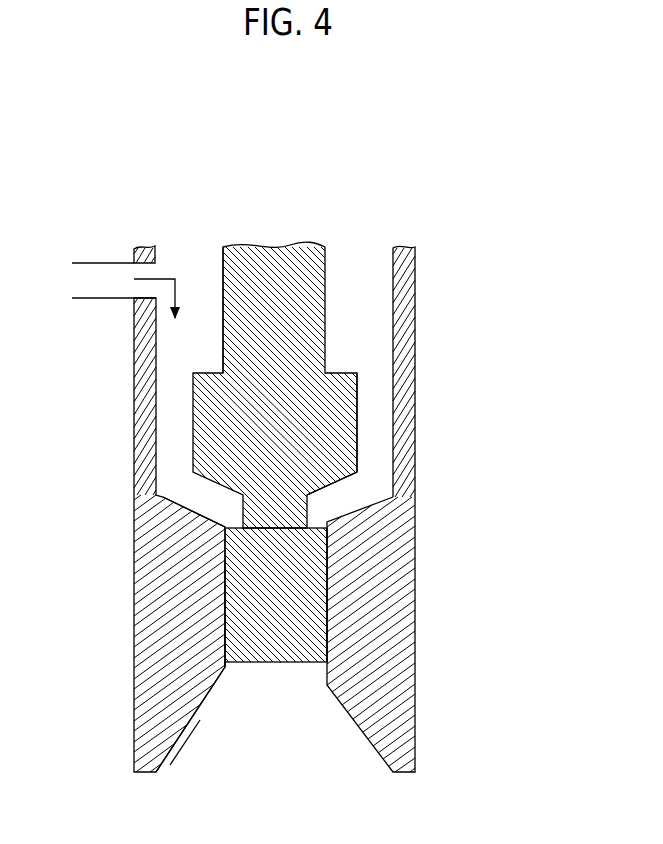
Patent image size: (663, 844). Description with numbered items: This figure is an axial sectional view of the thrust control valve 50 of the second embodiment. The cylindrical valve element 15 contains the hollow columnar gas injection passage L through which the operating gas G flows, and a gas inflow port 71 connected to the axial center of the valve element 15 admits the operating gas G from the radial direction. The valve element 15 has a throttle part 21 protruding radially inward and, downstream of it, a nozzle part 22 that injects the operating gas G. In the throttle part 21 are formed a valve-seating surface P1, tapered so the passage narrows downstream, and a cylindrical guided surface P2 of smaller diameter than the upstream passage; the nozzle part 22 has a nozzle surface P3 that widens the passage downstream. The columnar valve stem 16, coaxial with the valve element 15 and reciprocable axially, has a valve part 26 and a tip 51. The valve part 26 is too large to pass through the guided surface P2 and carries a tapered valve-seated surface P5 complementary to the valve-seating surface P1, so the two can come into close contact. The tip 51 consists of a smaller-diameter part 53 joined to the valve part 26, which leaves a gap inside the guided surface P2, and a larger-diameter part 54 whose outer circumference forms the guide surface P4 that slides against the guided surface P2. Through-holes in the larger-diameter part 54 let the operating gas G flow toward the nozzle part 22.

The valve element 15 is at (424, 296).
The valve stem 16 is at (215, 266).
The throttle part 21 is at (236, 675).
The nozzle part 22 is at (208, 718).
The valve part 26 is at (358, 410).
The thrust control valve 50 is at (281, 186).
The tip 51 is at (213, 620).
The smaller-diameter part 53 is at (237, 494).
The larger-diameter part 54 is at (222, 651).
The gas inflow port 71 is at (104, 300).
The operating gas G is at (375, 318).
The gas injection passage L is at (170, 440).
The valve-seating surface P1 is at (207, 504).
The guided surface P2 is at (222, 592).
The nozzle surface P3 is at (183, 748).
The guide surface P4 is at (328, 610).
The valve-seated surface P5 is at (344, 478).